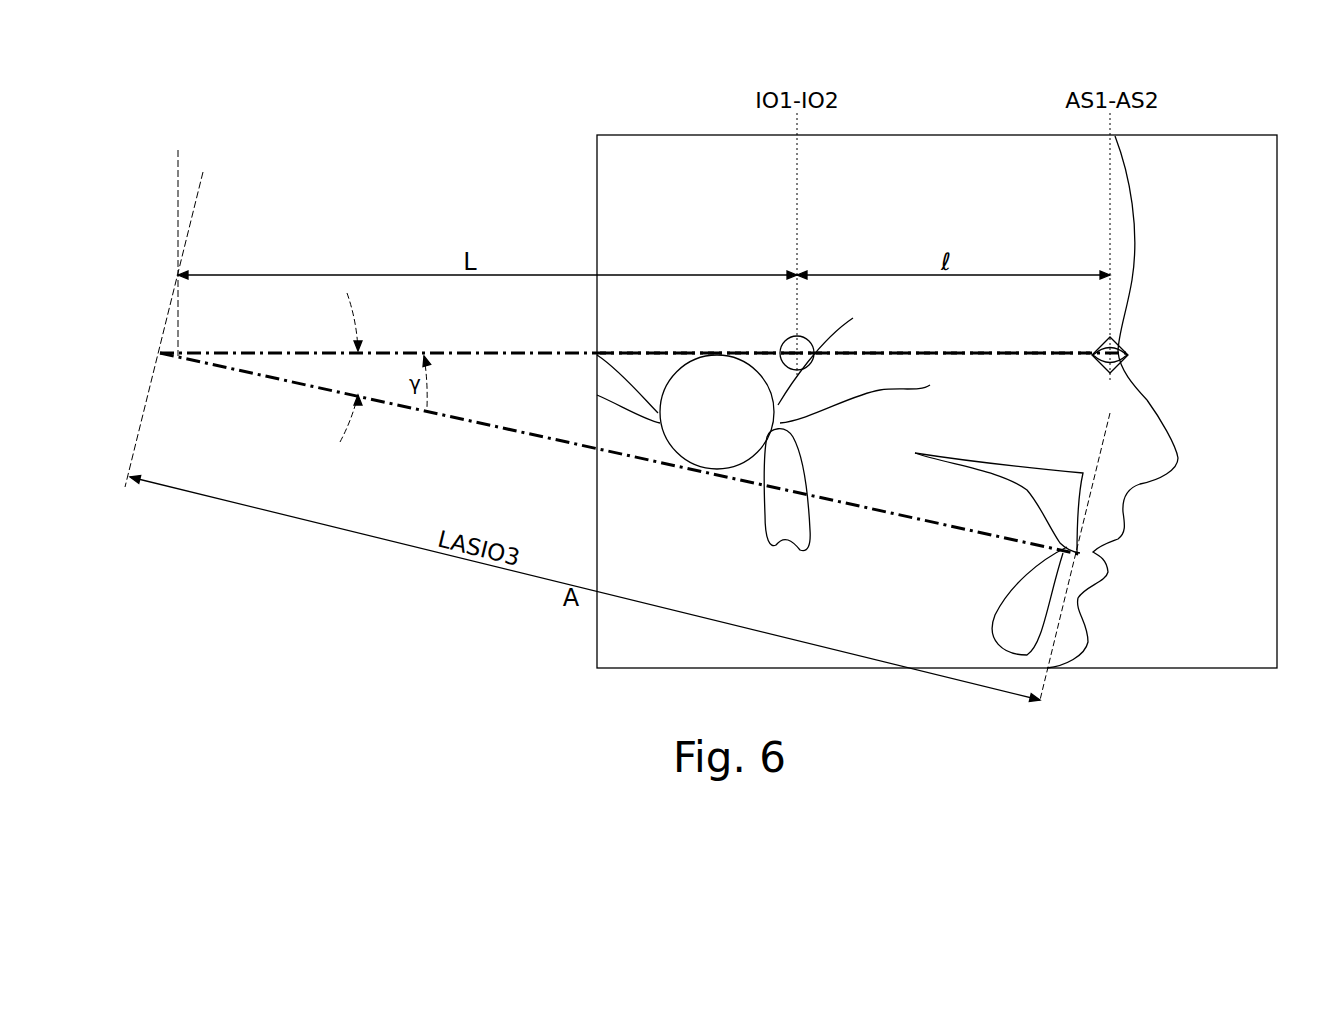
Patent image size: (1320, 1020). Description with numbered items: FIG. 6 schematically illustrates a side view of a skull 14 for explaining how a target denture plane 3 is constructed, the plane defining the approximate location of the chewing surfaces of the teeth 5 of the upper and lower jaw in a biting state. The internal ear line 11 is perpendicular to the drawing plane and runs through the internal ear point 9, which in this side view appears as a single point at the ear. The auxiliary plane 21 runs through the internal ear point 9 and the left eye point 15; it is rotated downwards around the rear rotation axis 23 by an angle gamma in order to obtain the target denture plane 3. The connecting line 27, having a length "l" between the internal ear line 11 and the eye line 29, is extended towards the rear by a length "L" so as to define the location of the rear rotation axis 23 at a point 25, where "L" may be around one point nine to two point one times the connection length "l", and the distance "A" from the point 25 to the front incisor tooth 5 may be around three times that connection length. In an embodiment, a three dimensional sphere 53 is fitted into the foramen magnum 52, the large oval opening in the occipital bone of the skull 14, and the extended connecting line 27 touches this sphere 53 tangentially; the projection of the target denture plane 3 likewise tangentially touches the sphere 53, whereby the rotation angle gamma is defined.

The target denture plane 3 is at (880, 512).
The teeth 5 is at (1083, 543).
The internal ear point 9 is at (800, 340).
The internal ear line 11 is at (793, 352).
The skull 14 is at (1165, 206).
The left eye point 15 is at (1128, 354).
The auxiliary plane 21 is at (977, 352).
The rear rotation axis 23 is at (182, 355).
The point 25 is at (178, 355).
The connecting line 27 is at (892, 352).
The eye line 29 is at (1120, 346).
The foramen magnum 52 is at (665, 378).
The three dimensional sphere 53 is at (661, 440).